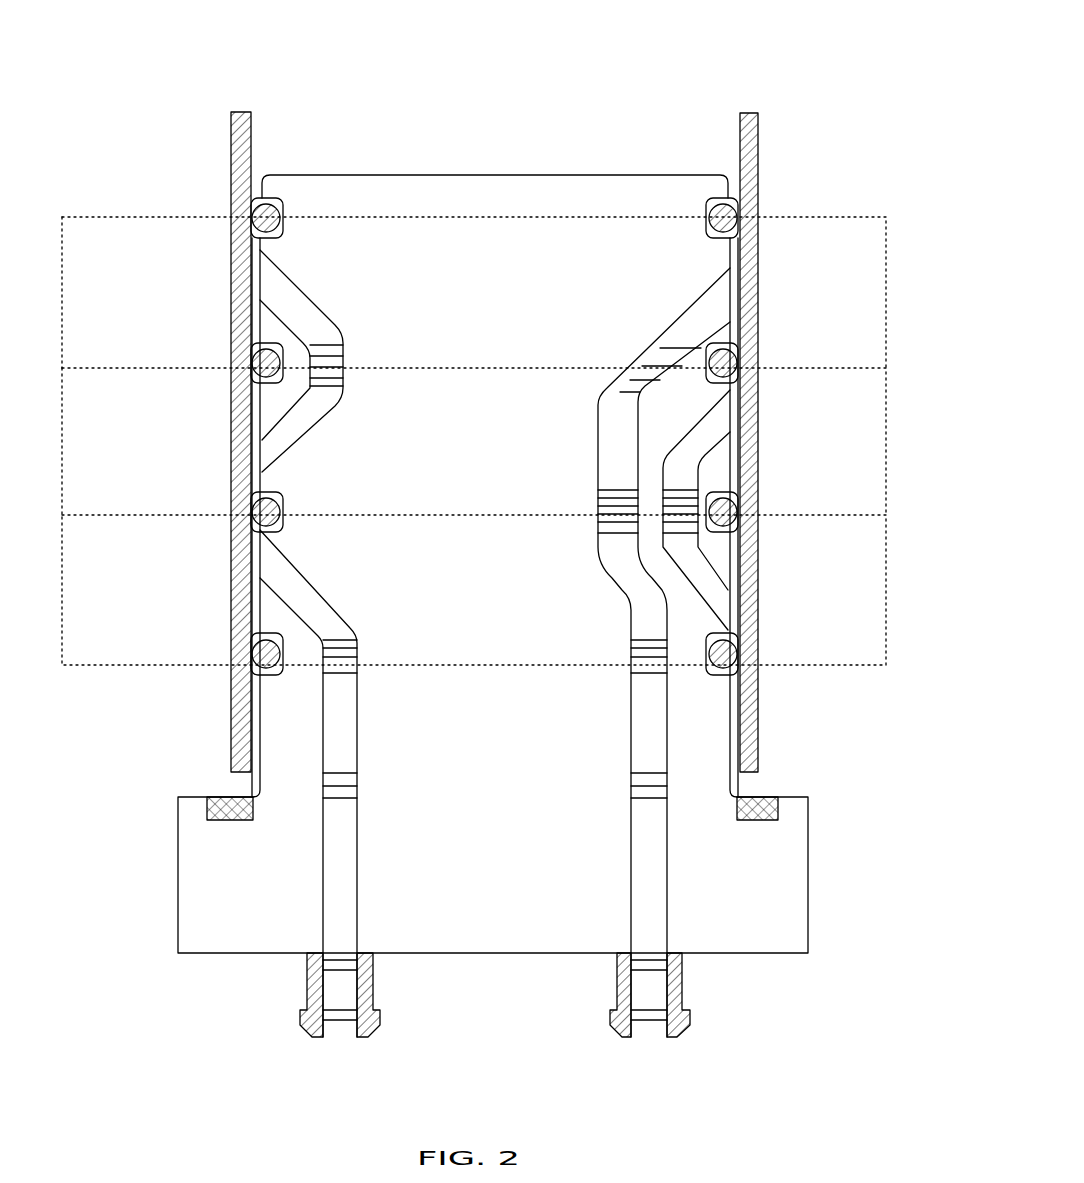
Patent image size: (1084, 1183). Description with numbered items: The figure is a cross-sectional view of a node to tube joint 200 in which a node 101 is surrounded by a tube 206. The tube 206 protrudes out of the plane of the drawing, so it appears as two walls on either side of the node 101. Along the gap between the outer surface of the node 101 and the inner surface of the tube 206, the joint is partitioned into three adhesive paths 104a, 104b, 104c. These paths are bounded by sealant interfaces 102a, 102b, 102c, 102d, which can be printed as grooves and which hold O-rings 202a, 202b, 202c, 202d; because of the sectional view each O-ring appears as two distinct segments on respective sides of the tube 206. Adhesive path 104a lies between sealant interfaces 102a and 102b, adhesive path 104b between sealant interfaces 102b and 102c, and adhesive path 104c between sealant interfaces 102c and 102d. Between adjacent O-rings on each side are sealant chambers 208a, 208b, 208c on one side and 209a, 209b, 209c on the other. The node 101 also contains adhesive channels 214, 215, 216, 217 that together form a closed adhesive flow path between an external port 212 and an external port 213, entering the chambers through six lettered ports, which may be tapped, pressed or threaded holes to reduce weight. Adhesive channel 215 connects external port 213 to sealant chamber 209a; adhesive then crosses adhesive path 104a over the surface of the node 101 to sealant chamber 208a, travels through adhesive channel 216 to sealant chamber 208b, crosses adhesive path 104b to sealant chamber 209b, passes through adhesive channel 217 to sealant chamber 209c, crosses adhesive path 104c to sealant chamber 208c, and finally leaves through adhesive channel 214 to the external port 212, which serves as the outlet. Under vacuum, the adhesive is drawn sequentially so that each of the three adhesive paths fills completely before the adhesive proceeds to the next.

The node to tube joint 200 is at (152, 55).
The node 101 is at (488, 206).
The adhesive path 104a is at (890, 287).
The adhesive path 104b is at (890, 434).
The adhesive path 104c is at (890, 590).
The tube 206 is at (250, 142).
The O-ring 202a is at (256, 212).
The O-ring 202b is at (258, 360).
The O-ring 202c is at (258, 502).
The O-ring 202d is at (256, 650).
The sealant interface 102a is at (272, 232).
The sealant interface 102b is at (270, 398).
The sealant interface 102c is at (268, 488).
The sealant interface 102d is at (270, 667).
The sealant chamber 208a is at (256, 296).
The sealant chamber 208b is at (258, 442).
The sealant chamber 208c is at (256, 590).
The sealant chamber 209a is at (740, 290).
The sealant chamber 209b is at (740, 415).
The sealant chamber 209c is at (740, 598).
The adhesive channel 216 is at (347, 334).
The adhesive channel 214 is at (358, 731).
The adhesive channel 215 is at (630, 726).
The adhesive channel 217 is at (728, 597).
The external port 212 is at (305, 987).
The external port 213 is at (688, 1012).